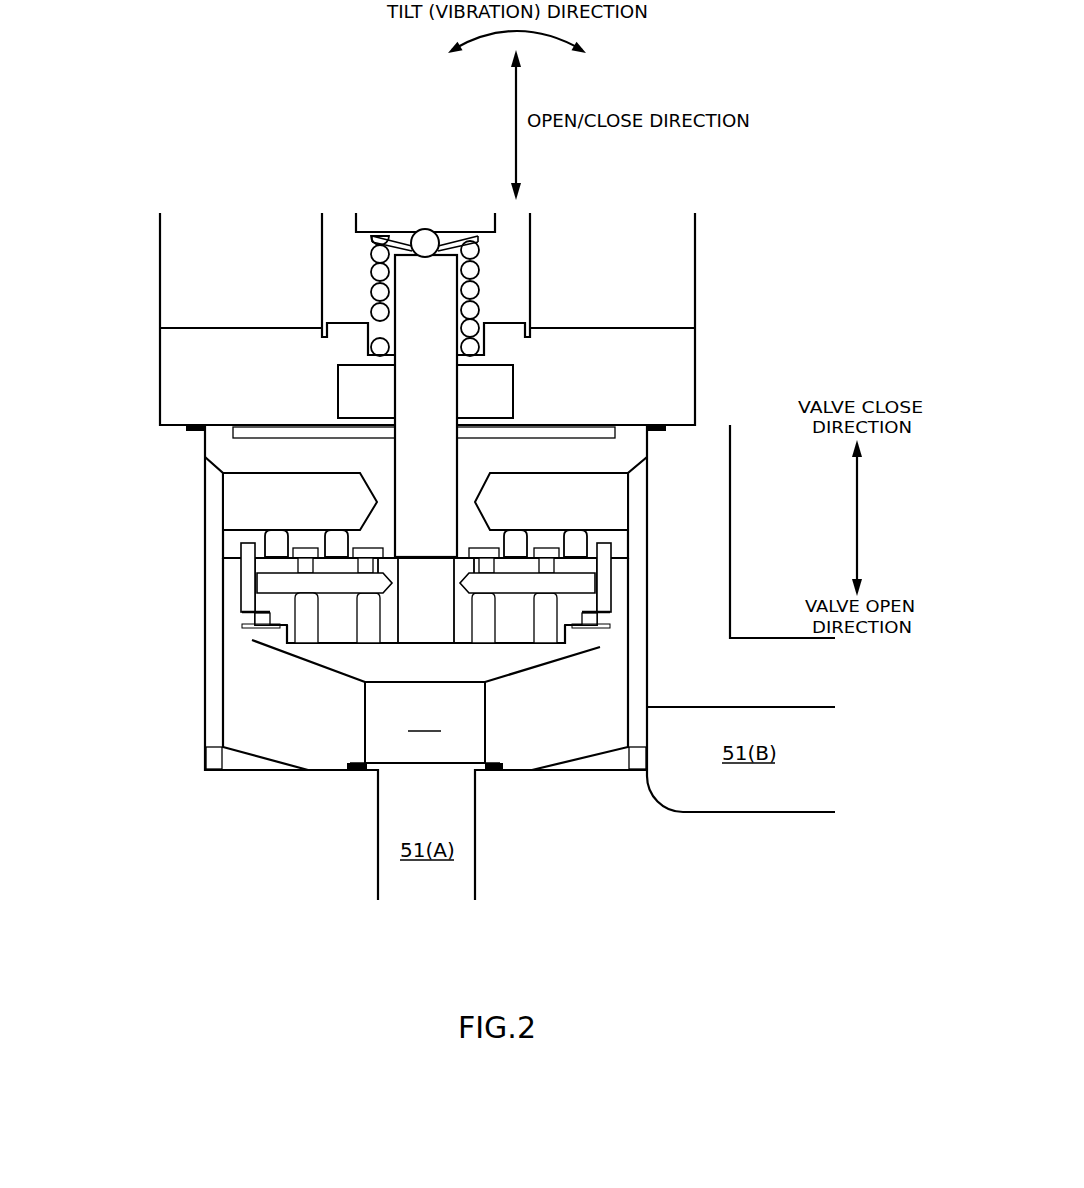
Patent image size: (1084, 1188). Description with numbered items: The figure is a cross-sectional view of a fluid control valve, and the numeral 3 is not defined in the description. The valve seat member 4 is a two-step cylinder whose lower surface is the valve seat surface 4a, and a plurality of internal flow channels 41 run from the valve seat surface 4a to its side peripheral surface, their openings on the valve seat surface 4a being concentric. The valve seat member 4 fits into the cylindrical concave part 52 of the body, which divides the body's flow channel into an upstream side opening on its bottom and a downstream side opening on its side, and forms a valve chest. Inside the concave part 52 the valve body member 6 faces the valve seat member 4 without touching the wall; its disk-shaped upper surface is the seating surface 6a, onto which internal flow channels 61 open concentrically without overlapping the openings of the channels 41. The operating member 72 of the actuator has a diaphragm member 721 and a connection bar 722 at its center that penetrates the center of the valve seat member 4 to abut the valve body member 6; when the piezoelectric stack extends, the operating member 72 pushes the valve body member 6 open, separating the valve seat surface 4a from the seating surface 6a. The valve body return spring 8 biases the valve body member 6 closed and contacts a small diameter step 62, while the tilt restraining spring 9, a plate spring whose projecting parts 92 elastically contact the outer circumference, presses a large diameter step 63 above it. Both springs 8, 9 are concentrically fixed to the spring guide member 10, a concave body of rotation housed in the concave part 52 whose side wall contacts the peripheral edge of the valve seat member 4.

The drive unit (actuator) 3 is at (724, 256).
The valve seat member 4 is at (222, 517).
The internal flow channel 41 is at (283, 516).
The valve seat surface 4a is at (562, 558).
The valve body member 6 is at (268, 569).
The seating surface 6a is at (515, 557).
The internal flow channel 61 is at (290, 597).
The small diameter step 62 is at (270, 615).
The large diameter step 63 is at (266, 630).
The valve body return spring 8 is at (260, 618).
The tilt restraining spring 9 is at (250, 612).
The projecting part 92 is at (248, 630).
The spring guide member 10 is at (222, 712).
The concave part 52 is at (215, 760).
The operating member 72 is at (596, 393).
The diaphragm member 721 is at (483, 418).
The connection bar 722 is at (457, 465).